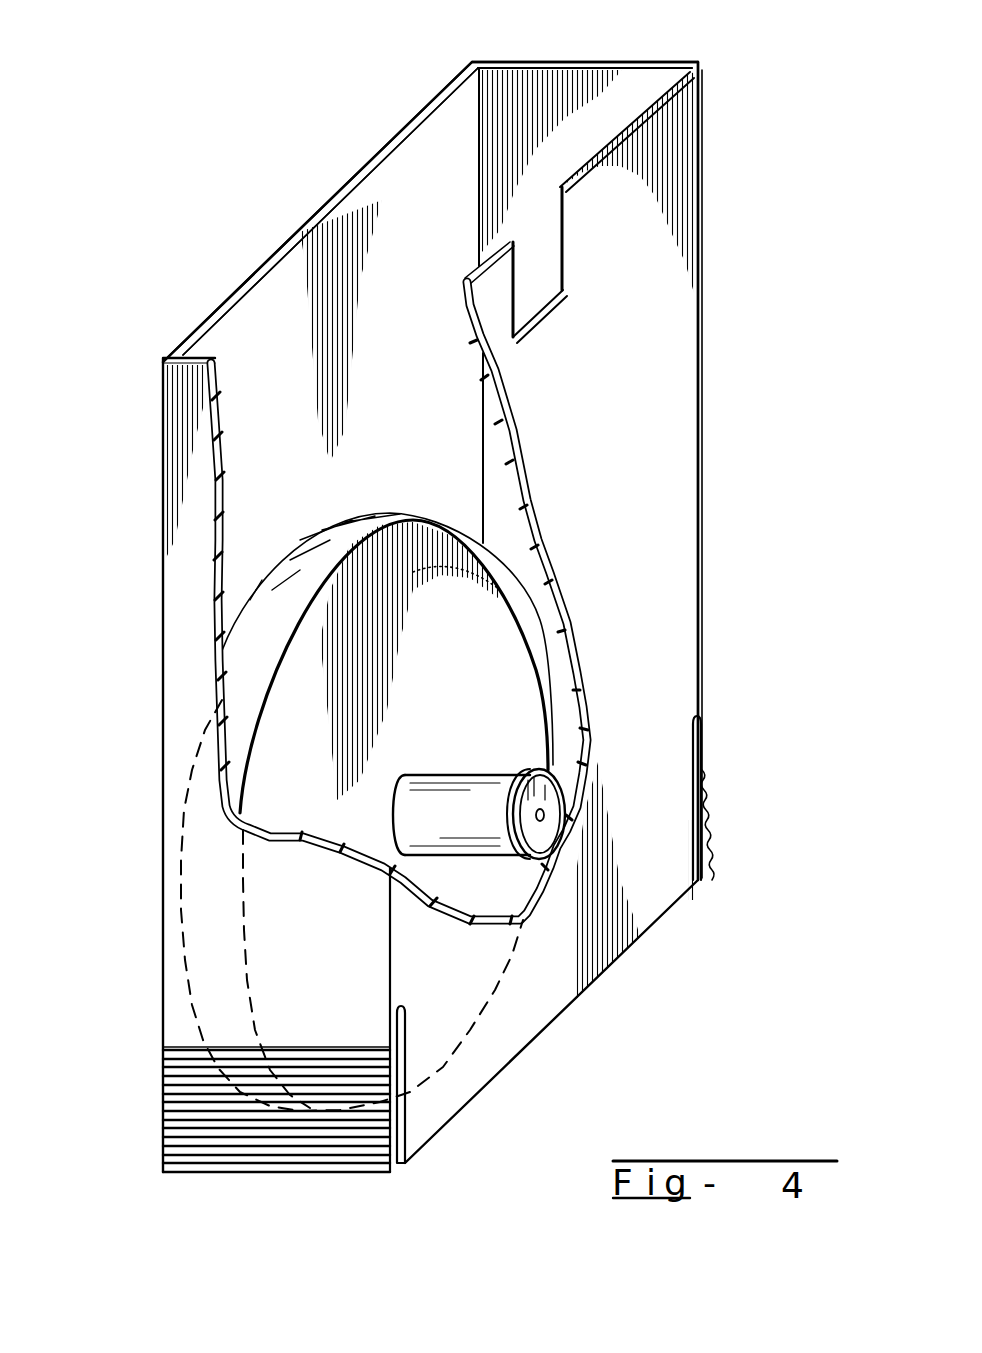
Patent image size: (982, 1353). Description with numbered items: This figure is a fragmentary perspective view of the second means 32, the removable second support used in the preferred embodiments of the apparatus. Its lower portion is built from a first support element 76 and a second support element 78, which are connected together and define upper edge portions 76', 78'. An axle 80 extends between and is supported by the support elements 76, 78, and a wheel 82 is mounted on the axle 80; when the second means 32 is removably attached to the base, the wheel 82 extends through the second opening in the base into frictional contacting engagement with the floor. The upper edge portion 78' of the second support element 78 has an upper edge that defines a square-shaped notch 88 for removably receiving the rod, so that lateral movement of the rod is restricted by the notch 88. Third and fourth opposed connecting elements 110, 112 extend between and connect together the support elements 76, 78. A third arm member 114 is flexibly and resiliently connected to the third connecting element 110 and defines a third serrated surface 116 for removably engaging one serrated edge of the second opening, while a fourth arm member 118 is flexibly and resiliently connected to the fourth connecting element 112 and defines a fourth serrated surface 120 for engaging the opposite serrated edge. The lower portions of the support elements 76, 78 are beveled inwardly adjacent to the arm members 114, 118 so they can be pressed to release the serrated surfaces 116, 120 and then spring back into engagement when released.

The second means 32 is at (732, 584).
The first support element 76 is at (300, 265).
The upper edge portion of first support element 76' is at (317, 212).
The second support element 78 is at (676, 481).
The upper edge portion of second support element 78' is at (606, 62).
The axle 80 is at (446, 796).
The wheel 82 is at (503, 593).
The square-shaped notch 88 is at (560, 240).
The third connecting element 110 is at (185, 485).
The fourth connecting element 112 is at (540, 87).
The third arm member 114 is at (393, 1102).
The third serrated surface 116 is at (333, 1147).
The fourth arm member 118 is at (702, 872).
The fourth serrated surface 120 is at (710, 820).